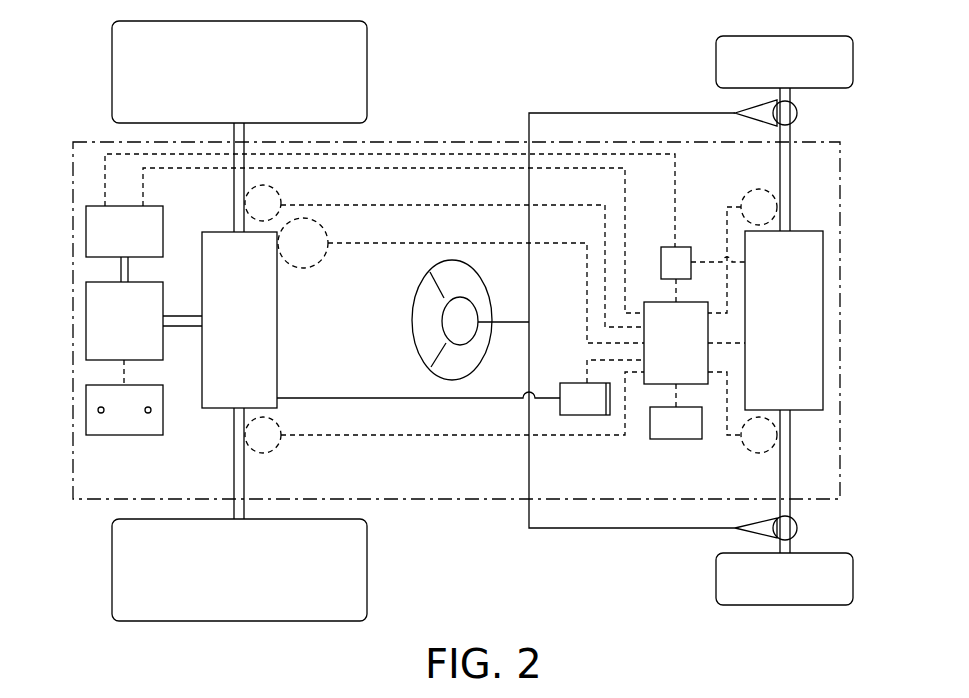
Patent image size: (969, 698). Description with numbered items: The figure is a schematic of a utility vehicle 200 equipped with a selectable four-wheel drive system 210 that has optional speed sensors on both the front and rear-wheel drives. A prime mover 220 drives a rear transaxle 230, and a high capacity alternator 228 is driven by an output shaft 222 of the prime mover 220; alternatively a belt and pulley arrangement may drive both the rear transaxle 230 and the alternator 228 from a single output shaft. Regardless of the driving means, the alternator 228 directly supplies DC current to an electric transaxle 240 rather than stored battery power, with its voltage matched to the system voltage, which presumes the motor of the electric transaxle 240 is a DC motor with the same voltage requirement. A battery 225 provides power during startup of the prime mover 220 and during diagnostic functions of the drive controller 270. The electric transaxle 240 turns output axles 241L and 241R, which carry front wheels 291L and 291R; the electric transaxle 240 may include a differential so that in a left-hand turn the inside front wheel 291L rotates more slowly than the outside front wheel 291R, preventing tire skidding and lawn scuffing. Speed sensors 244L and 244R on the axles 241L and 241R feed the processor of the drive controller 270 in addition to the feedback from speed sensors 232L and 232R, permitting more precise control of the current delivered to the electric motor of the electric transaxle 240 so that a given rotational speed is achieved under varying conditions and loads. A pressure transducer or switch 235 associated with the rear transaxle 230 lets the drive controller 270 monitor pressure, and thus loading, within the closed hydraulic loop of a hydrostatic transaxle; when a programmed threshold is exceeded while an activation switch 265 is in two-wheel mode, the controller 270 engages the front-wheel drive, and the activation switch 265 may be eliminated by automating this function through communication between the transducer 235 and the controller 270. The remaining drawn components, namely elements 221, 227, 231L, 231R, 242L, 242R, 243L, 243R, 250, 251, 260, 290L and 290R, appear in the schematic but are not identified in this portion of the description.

The utility vehicle 200 is at (595, 276).
The selectable four-wheel drive system 210 is at (138, 485).
The prime mover 220 is at (86, 320).
The prime mover output shaft 221 is at (182, 316).
The output shaft 222 is at (121, 268).
The battery 225 is at (86, 411).
The range selector 227 is at (686, 247).
The high capacity alternator 228 is at (86, 233).
The rear transaxle 230 is at (278, 319).
The left front axle shaft 231L is at (245, 131).
The right front axle shaft 231R is at (245, 477).
The speed sensor 232L is at (279, 196).
The speed sensor 232R is at (279, 427).
The pressure transducer or switch 235 is at (321, 225).
The electric transaxle 240 is at (824, 330).
The output axle 241L is at (791, 183).
The output axle 241R is at (791, 457).
The left rear brake 242L is at (791, 98).
The right rear brake 242R is at (792, 545).
The left rear wheel hub 243L is at (794, 119).
The right rear wheel hub 243R is at (792, 522).
The speed sensor 244L is at (742, 193).
The speed sensor 244R is at (750, 452).
The steering wheel 250 is at (418, 297).
The steering column 251 is at (512, 320).
The actuator 260 is at (568, 383).
The activation switch 265 is at (676, 440).
The drive controller 270 is at (650, 385).
The left front wheel 290L is at (270, 84).
The right front wheel 290R is at (271, 578).
The front-wheel 291L is at (815, 71).
The front-wheel 291R is at (817, 589).